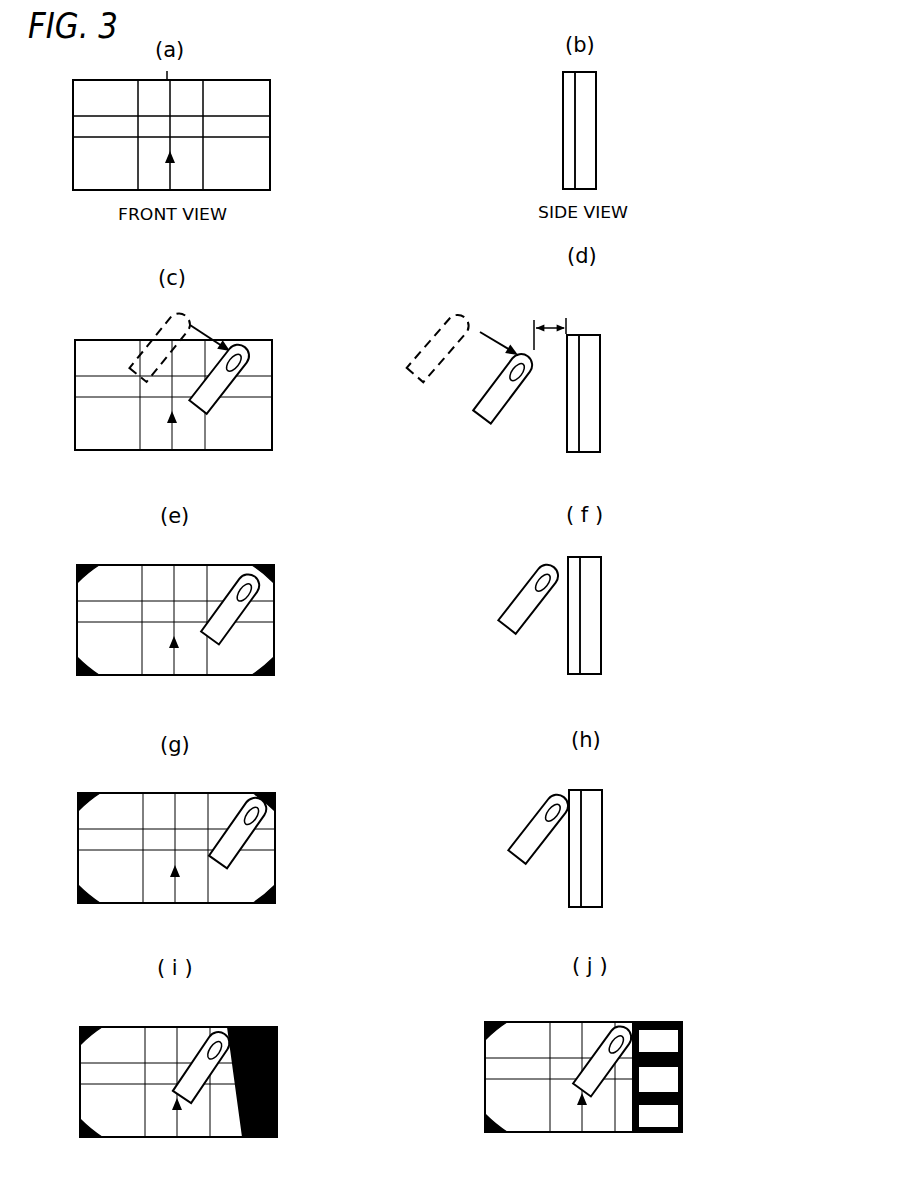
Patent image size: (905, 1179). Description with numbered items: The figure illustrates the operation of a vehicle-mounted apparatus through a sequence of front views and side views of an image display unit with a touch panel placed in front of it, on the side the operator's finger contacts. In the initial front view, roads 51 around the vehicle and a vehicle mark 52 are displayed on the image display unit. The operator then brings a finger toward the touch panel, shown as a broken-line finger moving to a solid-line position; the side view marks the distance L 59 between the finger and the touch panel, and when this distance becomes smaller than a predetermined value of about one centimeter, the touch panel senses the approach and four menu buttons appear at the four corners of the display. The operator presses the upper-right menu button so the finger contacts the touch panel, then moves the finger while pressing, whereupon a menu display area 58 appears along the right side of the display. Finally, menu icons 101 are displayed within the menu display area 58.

The roads 51 is at (205, 105).
The vehicle mark 52 is at (178, 158).
The menu display area 58 is at (277, 1028).
The distance L 59 is at (557, 313).
The menu icons 101 is at (680, 1032).